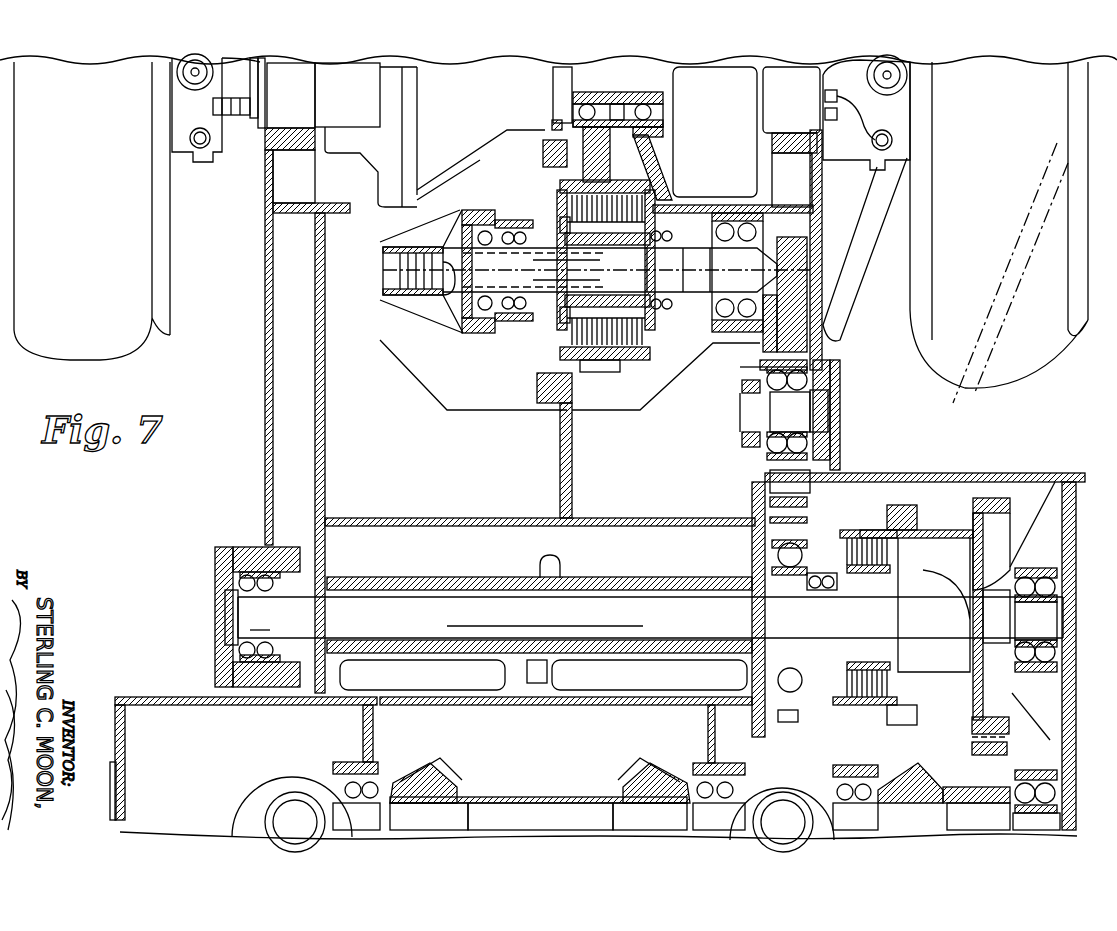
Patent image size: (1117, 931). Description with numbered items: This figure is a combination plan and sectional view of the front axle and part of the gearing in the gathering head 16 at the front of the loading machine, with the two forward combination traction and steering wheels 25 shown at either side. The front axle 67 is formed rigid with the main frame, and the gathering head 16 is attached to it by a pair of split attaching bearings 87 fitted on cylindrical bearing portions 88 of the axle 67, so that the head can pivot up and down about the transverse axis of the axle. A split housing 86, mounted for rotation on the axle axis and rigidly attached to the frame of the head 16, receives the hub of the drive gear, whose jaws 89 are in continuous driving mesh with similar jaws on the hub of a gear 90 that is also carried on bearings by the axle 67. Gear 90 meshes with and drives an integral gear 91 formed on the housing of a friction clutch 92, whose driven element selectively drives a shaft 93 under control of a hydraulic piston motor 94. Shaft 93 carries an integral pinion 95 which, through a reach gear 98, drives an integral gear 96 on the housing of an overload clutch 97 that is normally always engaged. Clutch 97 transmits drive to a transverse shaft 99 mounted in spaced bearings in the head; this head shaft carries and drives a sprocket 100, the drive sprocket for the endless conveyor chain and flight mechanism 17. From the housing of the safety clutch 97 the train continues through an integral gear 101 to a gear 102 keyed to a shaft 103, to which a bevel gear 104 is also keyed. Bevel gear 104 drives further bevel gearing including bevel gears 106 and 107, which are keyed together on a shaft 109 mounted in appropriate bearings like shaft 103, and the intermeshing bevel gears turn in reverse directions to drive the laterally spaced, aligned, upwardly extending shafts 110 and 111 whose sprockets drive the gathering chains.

The gathering head 16 is at (262, 455).
The endless conveyor chain and flight mechanism 17 is at (507, 673).
The forward combination traction and steering wheels 25 is at (551, 232).
The front axle 67 is at (663, 98).
The split housing 86 is at (657, 167).
The split attaching bearings 87 is at (270, 145).
The cylindrical bearing portions 88 is at (305, 88).
The jaws 89 is at (623, 107).
The gear 90 is at (590, 150).
The integral gear 91 is at (598, 372).
The friction clutch 92 is at (658, 352).
The shaft 93 is at (596, 270).
The hydraulic piston motor 94 is at (462, 305).
The integral pinion 95 is at (793, 240).
The integral gear 96 is at (803, 525).
The clutch 97 is at (863, 523).
The reach gear 98 is at (807, 500).
The transverse shaft 99 is at (639, 617).
The sprocket 100 is at (548, 565).
The integral gear 101 is at (990, 503).
The gear 102 is at (977, 750).
The shaft 103 is at (1001, 800).
The bevel gear 104 is at (900, 777).
The bevel gear 106 is at (642, 782).
The bevel gear 107 is at (437, 783).
The shaft 109 is at (538, 813).
The upwardly extending shaft 110 is at (763, 807).
The upwardly extending shaft 111 is at (306, 807).